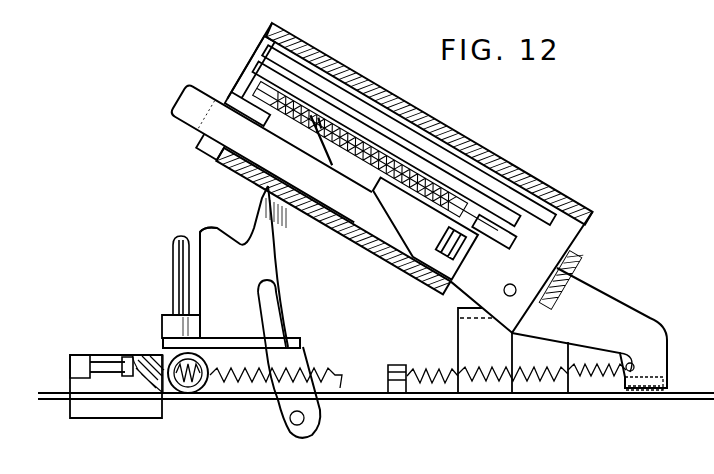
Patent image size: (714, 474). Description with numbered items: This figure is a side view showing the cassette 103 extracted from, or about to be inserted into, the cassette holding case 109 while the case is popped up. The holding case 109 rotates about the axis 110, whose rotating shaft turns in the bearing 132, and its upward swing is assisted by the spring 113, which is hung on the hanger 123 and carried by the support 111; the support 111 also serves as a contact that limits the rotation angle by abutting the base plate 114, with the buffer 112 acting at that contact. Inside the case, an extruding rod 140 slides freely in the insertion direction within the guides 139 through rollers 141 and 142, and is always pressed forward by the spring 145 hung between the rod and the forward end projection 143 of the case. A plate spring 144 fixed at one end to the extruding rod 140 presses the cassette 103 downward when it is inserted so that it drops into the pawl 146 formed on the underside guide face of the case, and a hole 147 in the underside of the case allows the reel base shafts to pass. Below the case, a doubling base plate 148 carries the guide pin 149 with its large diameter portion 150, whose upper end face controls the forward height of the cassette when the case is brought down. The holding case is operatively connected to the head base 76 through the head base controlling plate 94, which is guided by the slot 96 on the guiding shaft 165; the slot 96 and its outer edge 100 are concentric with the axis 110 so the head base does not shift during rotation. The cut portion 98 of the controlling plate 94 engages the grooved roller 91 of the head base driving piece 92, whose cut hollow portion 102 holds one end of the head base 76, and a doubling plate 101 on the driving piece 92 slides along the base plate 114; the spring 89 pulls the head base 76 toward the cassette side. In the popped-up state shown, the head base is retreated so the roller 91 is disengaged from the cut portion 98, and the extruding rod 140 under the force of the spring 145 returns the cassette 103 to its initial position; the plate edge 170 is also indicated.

The head base 76 is at (113, 367).
The spring 89 is at (337, 376).
The grooved roller 91 is at (187, 391).
The head base driving piece 92 is at (128, 385).
The head base controlling plate 94 is at (231, 418).
The slot 96 is at (271, 302).
The cut portion 98 is at (238, 243).
The outer edge 100 is at (203, 245).
The doubling plate 101 is at (102, 412).
The cut hollow portion 102 is at (102, 373).
The cassette 103 is at (211, 66).
The cassette holding case 109 is at (516, 174).
The axis 110 is at (510, 284).
The spring support 111 is at (614, 281).
The buffer 112 is at (641, 392).
The spring 113 is at (598, 372).
The base plate 114 is at (511, 398).
The spring hanger 123 is at (397, 393).
The bearing 132 is at (458, 340).
The guide 139 is at (515, 221).
The extruding rod 140 is at (460, 224).
The roller 141 is at (468, 167).
The roller 142 is at (290, 90).
The forward end projection 143 is at (262, 100).
The plate spring 144 is at (317, 143).
The spring 145 is at (374, 174).
The pawl 146 is at (212, 150).
The hole 147 is at (352, 238).
The doubling base plate 148 is at (227, 338).
The guide pin 149 is at (175, 281).
The large diameter portion 150 is at (170, 317).
The guiding shaft 165 is at (305, 418).
The plate edge 170 is at (246, 110).